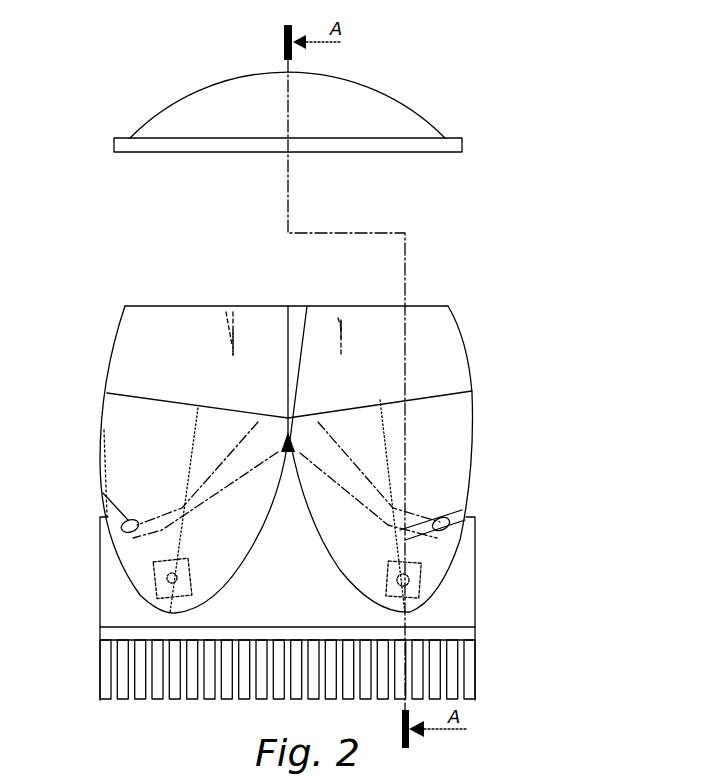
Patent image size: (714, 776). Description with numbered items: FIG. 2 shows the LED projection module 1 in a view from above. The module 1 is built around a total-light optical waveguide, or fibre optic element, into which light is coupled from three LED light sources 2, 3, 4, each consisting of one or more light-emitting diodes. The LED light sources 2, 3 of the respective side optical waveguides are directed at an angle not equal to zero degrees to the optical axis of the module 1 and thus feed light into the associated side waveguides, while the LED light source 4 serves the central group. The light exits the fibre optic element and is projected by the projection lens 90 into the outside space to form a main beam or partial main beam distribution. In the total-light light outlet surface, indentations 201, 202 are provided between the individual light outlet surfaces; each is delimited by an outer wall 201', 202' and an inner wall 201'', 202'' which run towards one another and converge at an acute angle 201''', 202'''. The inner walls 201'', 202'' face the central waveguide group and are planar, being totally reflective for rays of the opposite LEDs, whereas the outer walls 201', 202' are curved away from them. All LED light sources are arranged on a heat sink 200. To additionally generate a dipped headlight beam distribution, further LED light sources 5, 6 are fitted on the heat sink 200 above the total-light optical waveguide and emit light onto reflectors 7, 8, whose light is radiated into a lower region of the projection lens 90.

The LED projection module 1 is at (540, 145).
The projection lens 90 is at (396, 100).
The LED light source 2 is at (103, 493).
The LED light source 3 is at (449, 521).
The LED light source 4 is at (295, 442).
The LED light source 5 is at (158, 583).
The LED light source 6 is at (410, 580).
The reflector 7 is at (117, 568).
The reflector 8 is at (460, 568).
The heat sink 200 is at (470, 658).
The indentation 201 is at (381, 426).
The outer wall 201' is at (400, 304).
The inner wall 201'' is at (324, 258).
The acute angle 201''' is at (359, 360).
The indentation 202 is at (194, 433).
The outer wall 202' is at (182, 299).
The inner wall 202'' is at (268, 305).
The acute angle 202''' is at (191, 351).